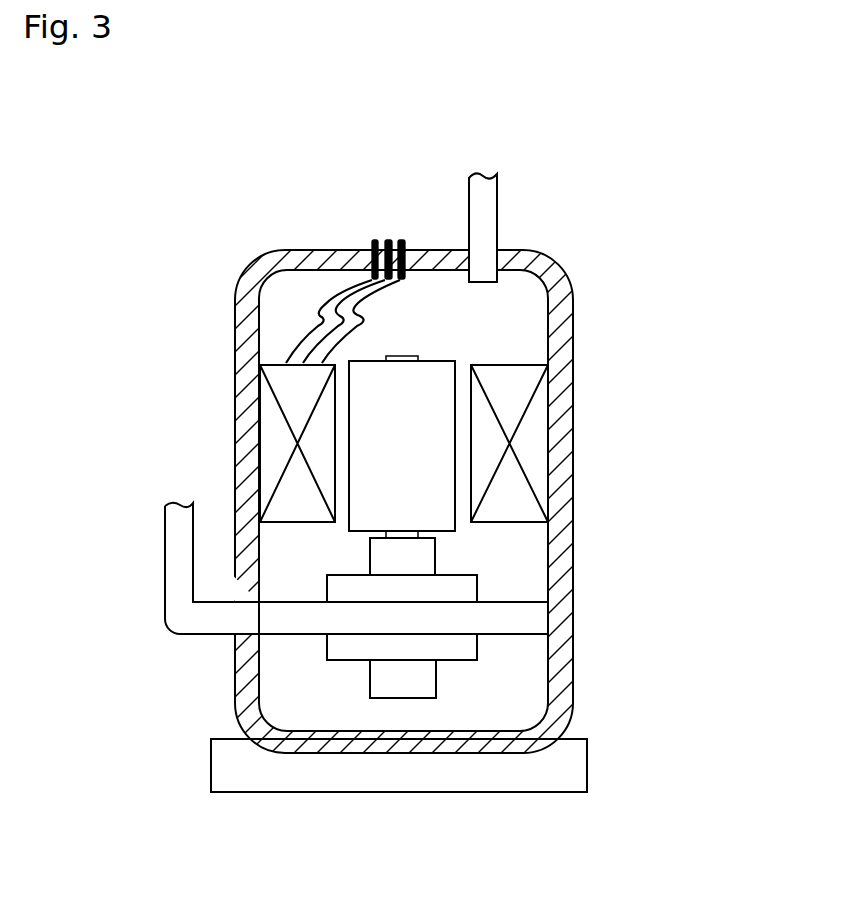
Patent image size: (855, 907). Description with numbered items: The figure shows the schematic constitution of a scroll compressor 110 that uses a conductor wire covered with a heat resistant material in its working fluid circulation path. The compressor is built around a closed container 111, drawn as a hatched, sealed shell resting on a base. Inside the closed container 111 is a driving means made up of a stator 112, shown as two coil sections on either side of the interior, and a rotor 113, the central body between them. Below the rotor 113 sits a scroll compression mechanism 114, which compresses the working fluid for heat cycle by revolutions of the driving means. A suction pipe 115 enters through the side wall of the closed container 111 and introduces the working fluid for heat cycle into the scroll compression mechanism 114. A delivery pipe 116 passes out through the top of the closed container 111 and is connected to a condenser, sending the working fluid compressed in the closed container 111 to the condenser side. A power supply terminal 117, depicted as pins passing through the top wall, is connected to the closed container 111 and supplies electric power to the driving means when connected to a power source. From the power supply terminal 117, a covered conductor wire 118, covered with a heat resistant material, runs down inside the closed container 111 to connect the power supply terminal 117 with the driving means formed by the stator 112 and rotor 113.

The scroll compressor 110 is at (660, 138).
The closed container 111 is at (573, 333).
The stator 112 is at (537, 433).
The rotor 113 is at (447, 524).
The scroll compression mechanism 114 is at (535, 620).
The suction pipe 115 is at (165, 540).
The delivery pipe 116 is at (497, 208).
The power supply terminal 117 is at (417, 232).
The covered conductor wire 118 is at (332, 297).